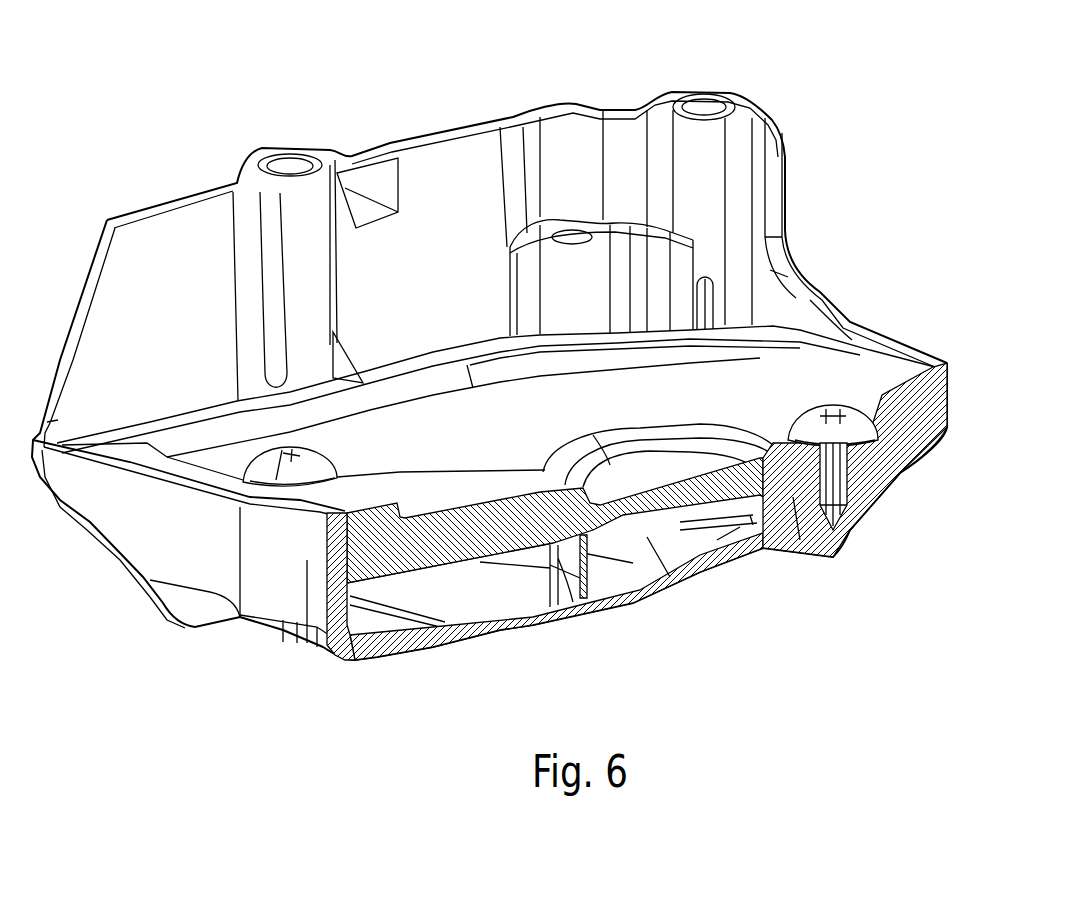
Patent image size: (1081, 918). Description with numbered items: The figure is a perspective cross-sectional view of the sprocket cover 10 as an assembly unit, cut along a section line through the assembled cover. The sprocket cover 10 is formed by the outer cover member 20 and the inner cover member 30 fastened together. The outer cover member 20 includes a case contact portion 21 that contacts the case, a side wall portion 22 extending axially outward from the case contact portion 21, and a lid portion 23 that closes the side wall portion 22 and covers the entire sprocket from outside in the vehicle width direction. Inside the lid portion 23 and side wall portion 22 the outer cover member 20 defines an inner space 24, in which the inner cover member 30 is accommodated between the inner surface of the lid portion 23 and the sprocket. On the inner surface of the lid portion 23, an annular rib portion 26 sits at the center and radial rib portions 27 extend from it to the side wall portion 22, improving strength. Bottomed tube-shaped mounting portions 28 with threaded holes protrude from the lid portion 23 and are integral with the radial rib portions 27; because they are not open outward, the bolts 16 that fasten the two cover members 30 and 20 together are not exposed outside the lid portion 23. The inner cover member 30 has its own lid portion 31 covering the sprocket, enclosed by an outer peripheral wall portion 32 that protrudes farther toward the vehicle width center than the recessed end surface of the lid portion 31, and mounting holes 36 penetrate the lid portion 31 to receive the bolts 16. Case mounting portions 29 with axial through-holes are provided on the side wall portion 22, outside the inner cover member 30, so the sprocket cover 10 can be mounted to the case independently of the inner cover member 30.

The sprocket cover 10 is at (880, 140).
The bolts 16 is at (330, 460).
The outer cover member 20 is at (948, 408).
The case contact portion 21 is at (572, 100).
The side wall portion 22 is at (150, 255).
The lid portion 23 is at (635, 603).
The inner space 24 is at (449, 601).
The annular rib portion 26 is at (556, 605).
The radial rib portions 27 is at (800, 495).
The mounting portions 28 is at (867, 482).
The case mounting portions 29 is at (290, 152).
The inner cover member 30 is at (825, 360).
The lid portion 31 is at (447, 415).
The outer peripheral wall portion 32 is at (753, 322).
The mounting holes 36 is at (748, 432).